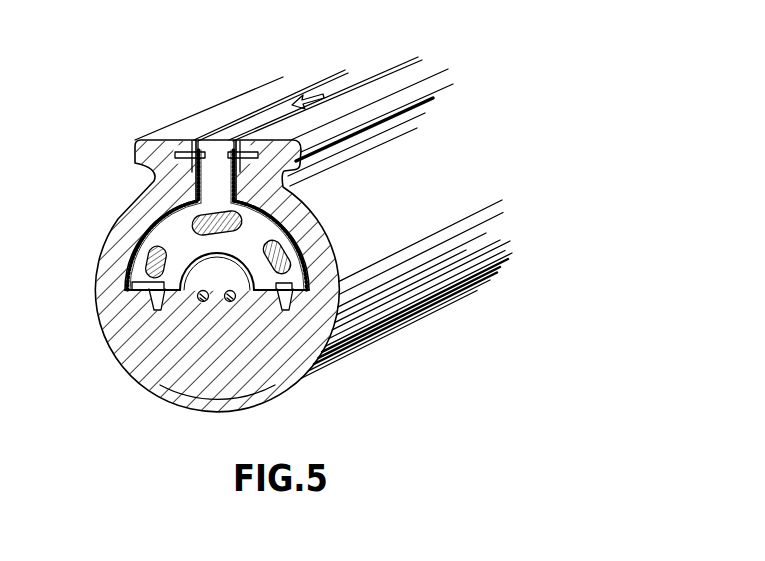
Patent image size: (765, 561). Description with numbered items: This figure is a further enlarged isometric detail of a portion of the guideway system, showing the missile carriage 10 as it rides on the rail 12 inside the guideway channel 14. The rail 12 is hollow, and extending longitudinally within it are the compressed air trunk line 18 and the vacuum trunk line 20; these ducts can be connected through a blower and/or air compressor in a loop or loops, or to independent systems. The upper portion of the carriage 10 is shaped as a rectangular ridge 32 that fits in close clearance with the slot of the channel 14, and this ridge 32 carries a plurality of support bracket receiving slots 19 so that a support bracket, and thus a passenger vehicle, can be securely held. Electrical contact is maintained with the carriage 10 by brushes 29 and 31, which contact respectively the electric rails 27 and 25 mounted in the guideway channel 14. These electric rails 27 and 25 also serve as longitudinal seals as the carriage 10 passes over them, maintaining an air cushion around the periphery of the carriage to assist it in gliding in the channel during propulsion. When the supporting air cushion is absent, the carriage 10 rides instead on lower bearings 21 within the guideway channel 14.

The missile carriage 10 is at (165, 228).
The rail 12 is at (205, 268).
The guideway channel 14 is at (194, 411).
The compressed air trunk line 18 is at (230, 298).
The support bracket receiving slots 19 is at (296, 103).
The vacuum trunk line 20 is at (200, 302).
The lower bearings 21 is at (135, 292).
The electric rail 25 is at (182, 152).
The electric rail 27 is at (150, 300).
The brush 29 is at (130, 284).
The brush 31 is at (199, 148).
The rectangular ridge 32 is at (218, 184).